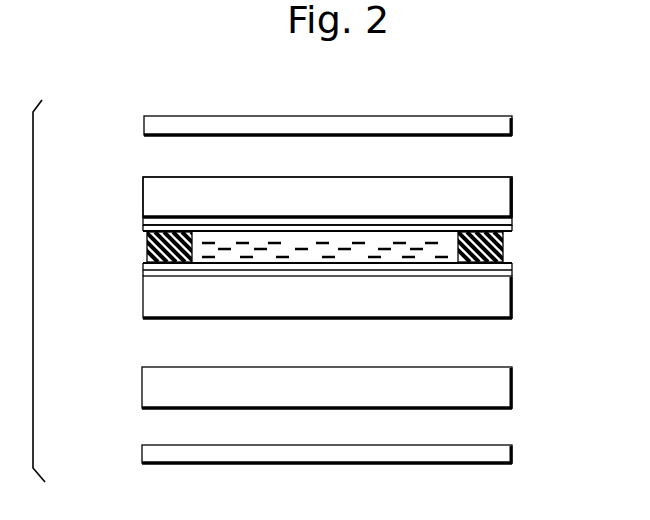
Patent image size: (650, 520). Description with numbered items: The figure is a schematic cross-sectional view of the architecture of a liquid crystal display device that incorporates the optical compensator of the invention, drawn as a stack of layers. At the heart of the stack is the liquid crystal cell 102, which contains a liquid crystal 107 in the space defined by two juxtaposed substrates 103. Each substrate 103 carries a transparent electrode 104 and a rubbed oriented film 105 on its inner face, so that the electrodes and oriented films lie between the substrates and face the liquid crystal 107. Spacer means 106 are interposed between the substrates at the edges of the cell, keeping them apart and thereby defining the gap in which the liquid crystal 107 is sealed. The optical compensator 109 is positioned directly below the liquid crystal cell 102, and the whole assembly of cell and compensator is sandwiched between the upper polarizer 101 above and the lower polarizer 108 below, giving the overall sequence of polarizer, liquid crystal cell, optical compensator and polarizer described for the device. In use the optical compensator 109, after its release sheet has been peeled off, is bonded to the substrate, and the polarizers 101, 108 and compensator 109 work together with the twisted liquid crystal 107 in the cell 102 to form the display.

The upper polarizer 101 is at (513, 120).
The liquid crystal cell 102 is at (512, 192).
The substrate 103 is at (150, 193).
The transparent electrode 104 is at (147, 226).
The oriented film 105 is at (146, 232).
The spacer 106 is at (504, 243).
The liquid crystal 107 is at (413, 248).
The lower polarizer 108 is at (497, 455).
The optical compensator 109 is at (496, 388).